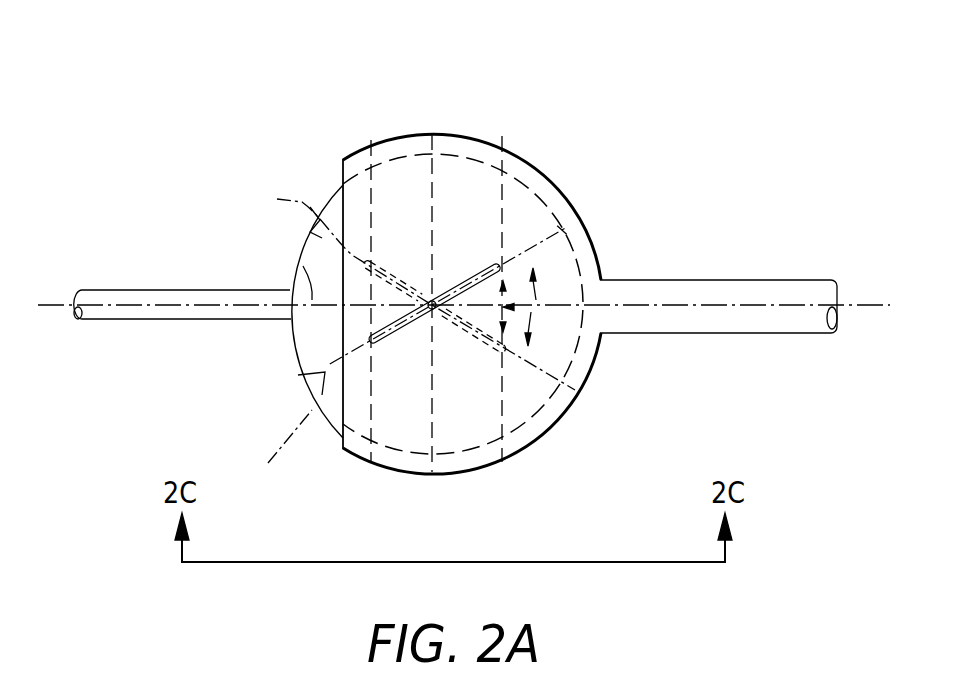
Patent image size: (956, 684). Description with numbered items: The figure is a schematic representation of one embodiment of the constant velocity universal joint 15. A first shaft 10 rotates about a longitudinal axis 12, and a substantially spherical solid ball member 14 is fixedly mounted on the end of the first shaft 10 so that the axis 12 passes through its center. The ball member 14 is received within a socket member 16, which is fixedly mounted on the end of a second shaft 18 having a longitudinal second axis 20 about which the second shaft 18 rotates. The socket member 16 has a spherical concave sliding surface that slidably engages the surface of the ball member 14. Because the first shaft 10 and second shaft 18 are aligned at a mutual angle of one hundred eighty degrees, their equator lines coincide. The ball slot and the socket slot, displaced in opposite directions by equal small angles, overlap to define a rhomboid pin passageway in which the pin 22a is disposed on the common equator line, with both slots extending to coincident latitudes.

The first shaft 10 is at (173, 289).
The longitudinal axis 12 is at (76, 305).
The ball member 14 is at (288, 342).
The universal joint 15 is at (345, 118).
The socket member 16 is at (578, 212).
The second shaft 18 is at (753, 334).
The second axis 20 is at (838, 303).
The pin 22a is at (424, 325).